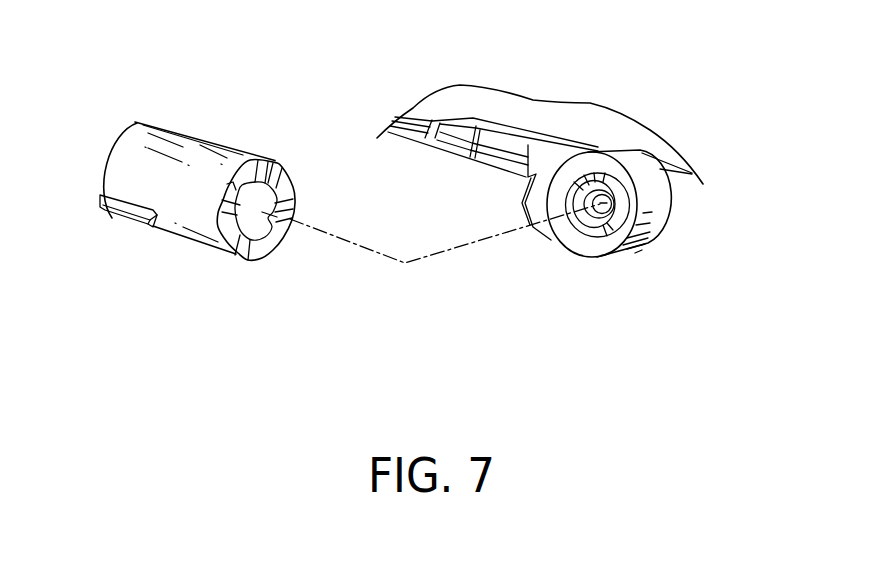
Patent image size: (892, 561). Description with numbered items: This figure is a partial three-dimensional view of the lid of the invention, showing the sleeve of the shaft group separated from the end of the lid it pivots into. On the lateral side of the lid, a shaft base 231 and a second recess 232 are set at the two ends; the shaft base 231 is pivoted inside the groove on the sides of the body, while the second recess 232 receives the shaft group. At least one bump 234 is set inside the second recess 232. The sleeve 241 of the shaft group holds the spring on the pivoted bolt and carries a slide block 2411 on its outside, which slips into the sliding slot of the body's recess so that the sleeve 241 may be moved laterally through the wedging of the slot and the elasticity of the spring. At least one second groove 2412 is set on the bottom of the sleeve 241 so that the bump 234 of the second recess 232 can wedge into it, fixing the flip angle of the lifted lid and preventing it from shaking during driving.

The shaft base 231 is at (650, 243).
The second recess 232 is at (555, 231).
The bump 234 is at (571, 181).
The sleeve 241 is at (187, 258).
The slide block 2411 is at (128, 213).
The second groove 2412 is at (258, 247).